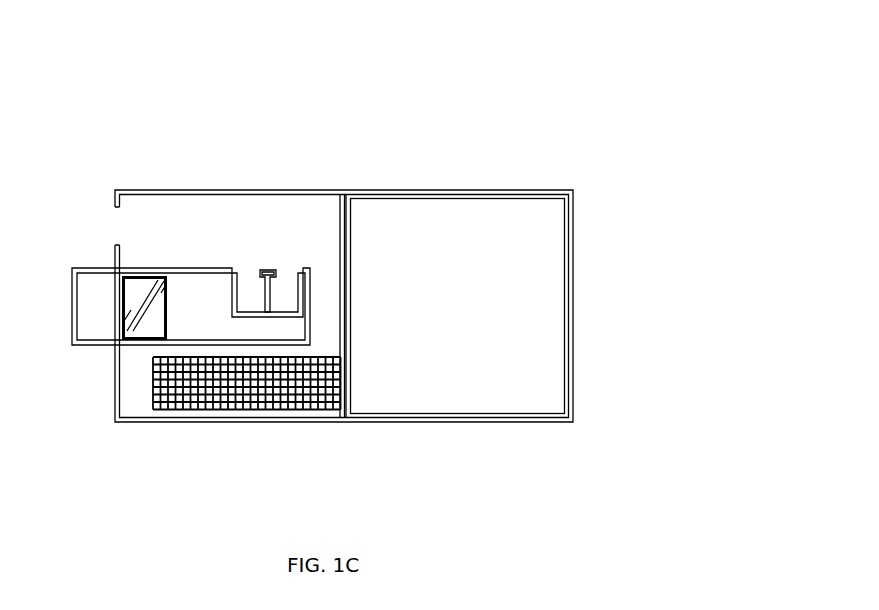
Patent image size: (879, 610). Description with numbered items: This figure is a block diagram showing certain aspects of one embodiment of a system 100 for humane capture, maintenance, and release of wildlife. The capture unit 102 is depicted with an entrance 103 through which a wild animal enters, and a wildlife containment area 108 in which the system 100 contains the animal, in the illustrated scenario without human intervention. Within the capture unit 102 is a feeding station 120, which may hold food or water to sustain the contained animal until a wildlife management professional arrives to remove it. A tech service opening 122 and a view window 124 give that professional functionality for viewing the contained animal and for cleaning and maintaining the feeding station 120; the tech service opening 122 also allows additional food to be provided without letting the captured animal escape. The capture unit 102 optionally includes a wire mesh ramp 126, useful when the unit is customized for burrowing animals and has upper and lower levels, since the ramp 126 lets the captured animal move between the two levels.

The system 100 is at (498, 48).
The capture unit 102 is at (490, 156).
The entrance 103 is at (118, 224).
The wildlife containment area 108 is at (181, 264).
The feeding station 120 is at (258, 280).
The tech service opening 122 is at (72, 307).
The view window 124 is at (128, 322).
The wire mesh ramp 126 is at (229, 410).